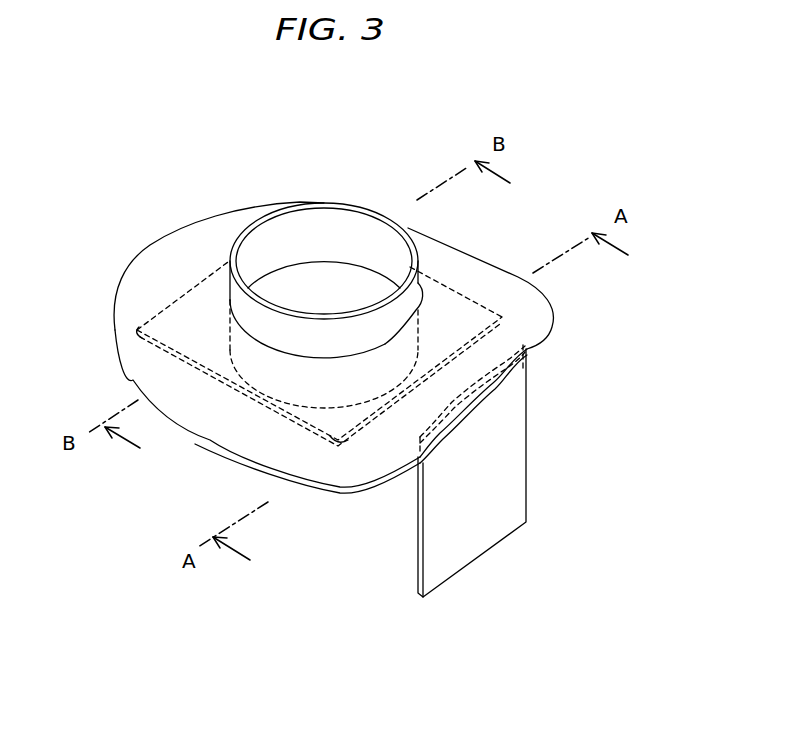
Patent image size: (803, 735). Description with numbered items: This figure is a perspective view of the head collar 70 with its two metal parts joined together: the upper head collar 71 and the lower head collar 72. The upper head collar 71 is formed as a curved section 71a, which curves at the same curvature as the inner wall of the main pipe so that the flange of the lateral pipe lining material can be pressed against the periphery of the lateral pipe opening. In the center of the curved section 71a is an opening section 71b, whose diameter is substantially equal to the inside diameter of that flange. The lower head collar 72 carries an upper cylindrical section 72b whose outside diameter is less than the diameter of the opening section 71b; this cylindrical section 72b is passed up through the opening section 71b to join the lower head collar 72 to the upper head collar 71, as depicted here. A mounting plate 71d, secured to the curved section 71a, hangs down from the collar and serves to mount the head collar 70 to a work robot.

The head collar 70 is at (592, 427).
The upper head collar 71 is at (556, 327).
The curved section 71a is at (160, 262).
The opening section 71b is at (218, 268).
The mounting plate 71d is at (498, 510).
The lower head collar 72 is at (458, 297).
The upper cylindrical section 72b is at (335, 203).